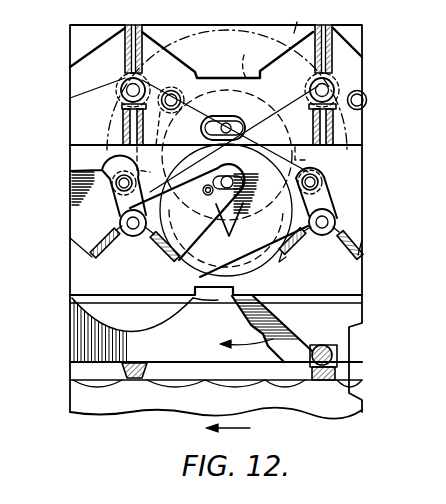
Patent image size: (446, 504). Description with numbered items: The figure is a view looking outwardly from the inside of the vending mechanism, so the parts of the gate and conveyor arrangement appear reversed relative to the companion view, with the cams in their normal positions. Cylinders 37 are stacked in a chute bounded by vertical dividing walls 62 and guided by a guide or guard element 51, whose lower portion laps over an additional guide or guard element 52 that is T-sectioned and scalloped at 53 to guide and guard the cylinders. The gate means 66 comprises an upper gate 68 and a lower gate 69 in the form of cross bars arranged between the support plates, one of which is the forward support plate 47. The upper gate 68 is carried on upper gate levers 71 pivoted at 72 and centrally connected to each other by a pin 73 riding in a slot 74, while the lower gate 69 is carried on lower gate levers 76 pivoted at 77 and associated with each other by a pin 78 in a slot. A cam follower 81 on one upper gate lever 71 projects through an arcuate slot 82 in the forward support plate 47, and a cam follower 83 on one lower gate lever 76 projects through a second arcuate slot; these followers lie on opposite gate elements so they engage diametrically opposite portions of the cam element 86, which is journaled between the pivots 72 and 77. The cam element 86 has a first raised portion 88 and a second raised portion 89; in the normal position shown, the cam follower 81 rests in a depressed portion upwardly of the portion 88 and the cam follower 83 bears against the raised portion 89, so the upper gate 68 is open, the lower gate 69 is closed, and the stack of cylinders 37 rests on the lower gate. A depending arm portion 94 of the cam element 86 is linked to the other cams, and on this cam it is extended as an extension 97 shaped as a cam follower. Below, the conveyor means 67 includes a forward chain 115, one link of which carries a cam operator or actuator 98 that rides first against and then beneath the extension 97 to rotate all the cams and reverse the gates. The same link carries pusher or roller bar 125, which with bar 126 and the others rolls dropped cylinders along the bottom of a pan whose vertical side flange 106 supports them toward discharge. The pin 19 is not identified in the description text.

The vertical dividing wall 62 is at (333, 27).
The guide or guard element 51 is at (296, 20).
The cylinder 37 is at (192, 265).
The arcuate slot 82 is at (362, 52).
The cam element 86 is at (250, 59).
The upper gate lever 71 is at (362, 128).
The pivot 72 is at (335, 85).
The cam follower 81 is at (366, 101).
The upper gate 68 is at (310, 128).
The first raised portion 88 is at (134, 159).
The second raised portion 89 is at (310, 162).
The cam follower 83 is at (330, 178).
The slot 74 is at (210, 142).
The pin 73 is at (232, 138).
The pin 78 is at (244, 183).
The pin 19 is at (214, 190).
The lower gate lever 76 is at (233, 226).
The pivot 77 is at (345, 230).
The lower gate 69 is at (345, 250).
The gate means 66 is at (288, 260).
The forward support plate 47 is at (362, 283).
The scallops 53 is at (72, 312).
The depending arm portion 94 is at (218, 299).
The extension 97 is at (290, 320).
The cam operator or actuator 98 is at (338, 354).
The conveyor means 67 is at (72, 370).
The forward chain 115 is at (70, 380).
The side flange 106 is at (70, 408).
The pusher or roller bar 126 is at (134, 380).
The pusher or roller bar 125 is at (322, 382).
The additional guide or guard element 52 is at (186, 412).